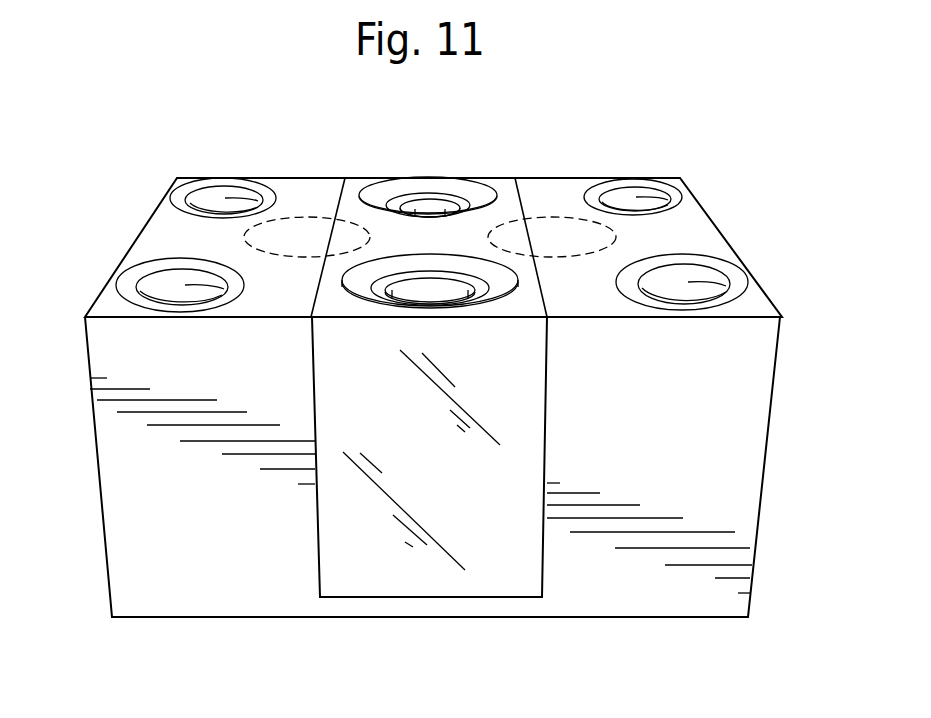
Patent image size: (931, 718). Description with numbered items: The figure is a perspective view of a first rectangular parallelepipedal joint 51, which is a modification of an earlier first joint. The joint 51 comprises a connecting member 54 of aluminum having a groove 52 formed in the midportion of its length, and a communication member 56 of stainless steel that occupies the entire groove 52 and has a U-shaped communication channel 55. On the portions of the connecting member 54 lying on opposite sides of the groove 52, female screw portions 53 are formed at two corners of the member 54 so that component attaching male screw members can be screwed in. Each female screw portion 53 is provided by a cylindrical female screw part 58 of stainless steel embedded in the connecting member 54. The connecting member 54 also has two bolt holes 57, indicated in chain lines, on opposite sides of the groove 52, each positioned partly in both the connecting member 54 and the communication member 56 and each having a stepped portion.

The first rectangular parallelepipedal joint 51 is at (718, 175).
The groove 52 is at (547, 423).
The female screw portion 53 is at (168, 197).
The connecting member 54 is at (743, 473).
The U-shaped communication channel 55 is at (433, 205).
The communication member 56 is at (500, 570).
The bolt hole 57 is at (298, 215).
The cylindrical female screw part 58 is at (193, 212).